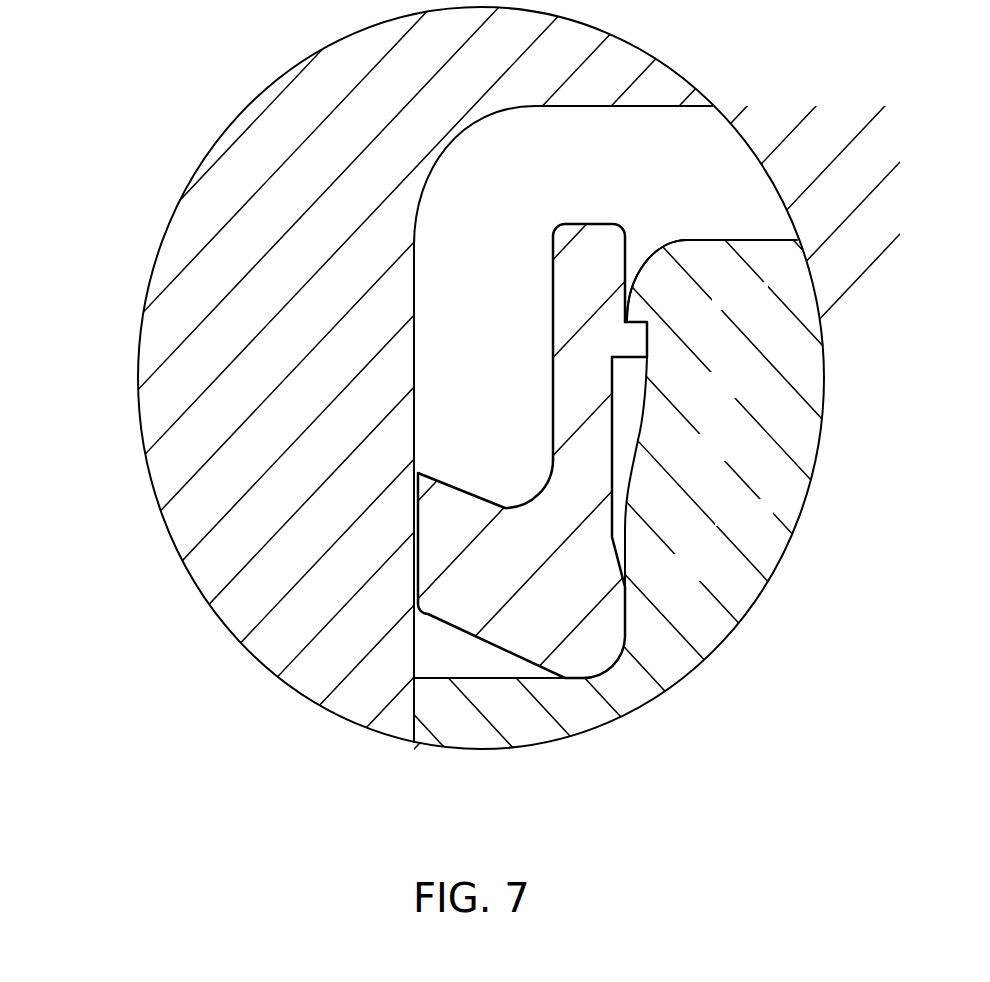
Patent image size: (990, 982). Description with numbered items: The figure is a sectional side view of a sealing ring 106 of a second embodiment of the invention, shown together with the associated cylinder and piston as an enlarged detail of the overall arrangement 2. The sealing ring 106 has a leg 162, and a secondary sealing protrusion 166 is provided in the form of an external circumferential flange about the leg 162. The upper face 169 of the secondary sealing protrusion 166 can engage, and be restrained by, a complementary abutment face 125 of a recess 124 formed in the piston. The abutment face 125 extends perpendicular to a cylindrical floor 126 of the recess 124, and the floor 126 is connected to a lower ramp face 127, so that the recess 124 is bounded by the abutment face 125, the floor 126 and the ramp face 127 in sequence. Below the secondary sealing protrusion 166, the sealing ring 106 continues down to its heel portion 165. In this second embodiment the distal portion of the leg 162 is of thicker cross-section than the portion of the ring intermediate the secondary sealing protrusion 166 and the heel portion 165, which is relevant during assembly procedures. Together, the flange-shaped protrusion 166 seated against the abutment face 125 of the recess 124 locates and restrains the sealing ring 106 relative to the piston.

The sealing arrangement 2 is at (843, 288).
The sealing ring 106 is at (526, 458).
The recess 124 is at (625, 455).
The abutment face 125 is at (647, 337).
The floor 126 is at (648, 373).
The lower ramp face 127 is at (631, 477).
The leg 162 is at (592, 262).
The heel portion 165 is at (595, 648).
The secondary sealing protrusion 166 is at (612, 332).
The upper face 169 is at (628, 318).